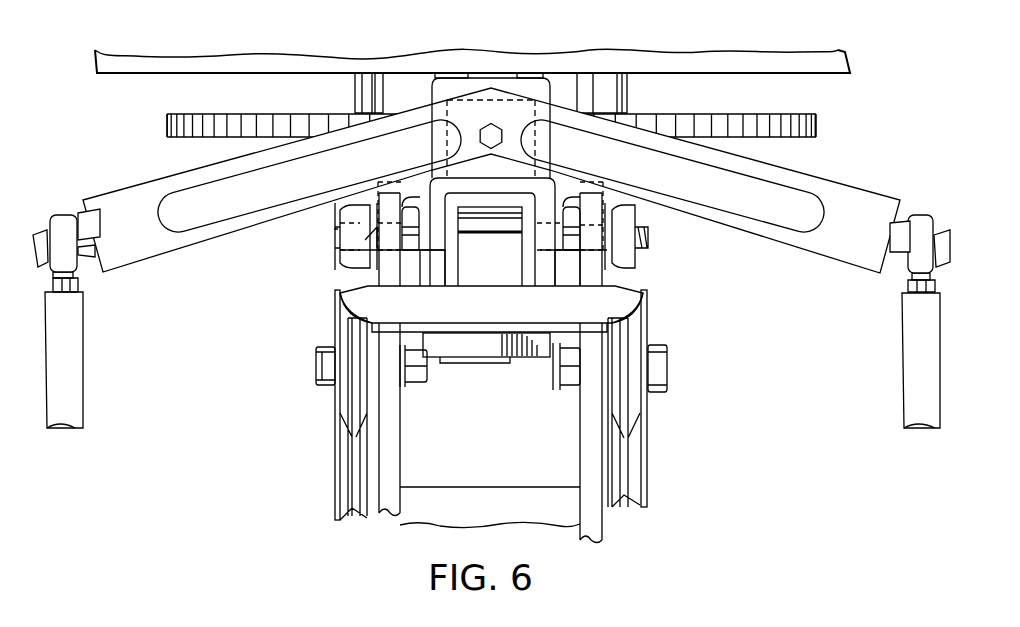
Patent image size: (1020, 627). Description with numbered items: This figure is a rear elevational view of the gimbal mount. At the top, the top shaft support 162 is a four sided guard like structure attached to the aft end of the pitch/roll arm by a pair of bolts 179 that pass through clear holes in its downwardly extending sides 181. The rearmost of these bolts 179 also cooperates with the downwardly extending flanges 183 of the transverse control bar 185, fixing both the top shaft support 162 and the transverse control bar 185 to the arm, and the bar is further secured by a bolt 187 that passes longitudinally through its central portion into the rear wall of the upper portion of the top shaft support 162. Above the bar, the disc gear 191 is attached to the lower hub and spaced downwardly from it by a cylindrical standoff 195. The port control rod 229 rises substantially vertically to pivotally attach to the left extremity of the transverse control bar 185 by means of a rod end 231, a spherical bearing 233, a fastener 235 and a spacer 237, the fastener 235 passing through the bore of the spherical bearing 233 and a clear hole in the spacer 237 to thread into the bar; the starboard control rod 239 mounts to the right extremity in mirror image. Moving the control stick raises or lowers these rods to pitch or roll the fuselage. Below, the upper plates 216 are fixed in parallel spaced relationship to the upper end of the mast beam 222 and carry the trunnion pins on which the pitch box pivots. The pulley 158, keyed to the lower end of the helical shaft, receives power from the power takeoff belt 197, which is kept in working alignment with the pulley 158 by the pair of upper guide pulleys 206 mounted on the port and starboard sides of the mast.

The pulley 158 is at (548, 349).
The top shaft support 162 is at (550, 70).
The bolts 179 is at (413, 223).
The downwardly extending sides 181 is at (437, 190).
The downwardly extending flanges 183 is at (385, 190).
The transverse control bar 185 is at (795, 163).
The bolt 187 is at (492, 123).
The disc gear 191 is at (757, 114).
The cylindrical standoff 195 is at (618, 92).
The power takeoff belt 197 is at (500, 316).
The upper guide pulleys 206 is at (333, 320).
The upper plate 216 is at (592, 278).
The mast beam 222 is at (500, 511).
The port control rod 229 is at (67, 355).
The rod end 231 is at (62, 223).
The spherical bearing 233 is at (85, 250).
The fastener 235 is at (36, 232).
The spacer 237 is at (88, 220).
The starboard control rod 239 is at (920, 364).